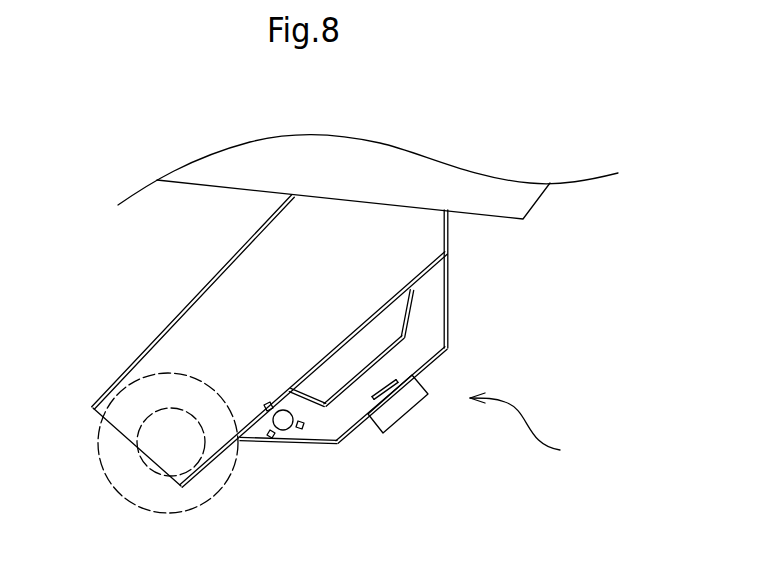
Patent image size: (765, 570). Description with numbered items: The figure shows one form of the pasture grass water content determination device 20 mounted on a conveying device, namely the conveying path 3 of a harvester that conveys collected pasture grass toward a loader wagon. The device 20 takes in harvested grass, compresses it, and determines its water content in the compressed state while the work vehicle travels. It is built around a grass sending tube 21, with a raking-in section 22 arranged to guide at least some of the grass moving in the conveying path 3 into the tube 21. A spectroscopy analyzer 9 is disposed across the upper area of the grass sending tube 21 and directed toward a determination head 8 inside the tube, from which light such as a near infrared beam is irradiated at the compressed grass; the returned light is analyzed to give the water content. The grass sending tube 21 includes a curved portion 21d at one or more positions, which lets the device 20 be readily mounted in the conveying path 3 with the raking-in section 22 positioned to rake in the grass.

The conveying path 3 is at (213, 283).
The determination head 8 is at (382, 390).
The spectroscopy analyzer 9 is at (405, 403).
The pasture grass water content determination device 20 is at (532, 428).
The grass sending tube 21 is at (352, 432).
The curved portion 21d is at (397, 335).
The raking-in section 22 is at (285, 423).